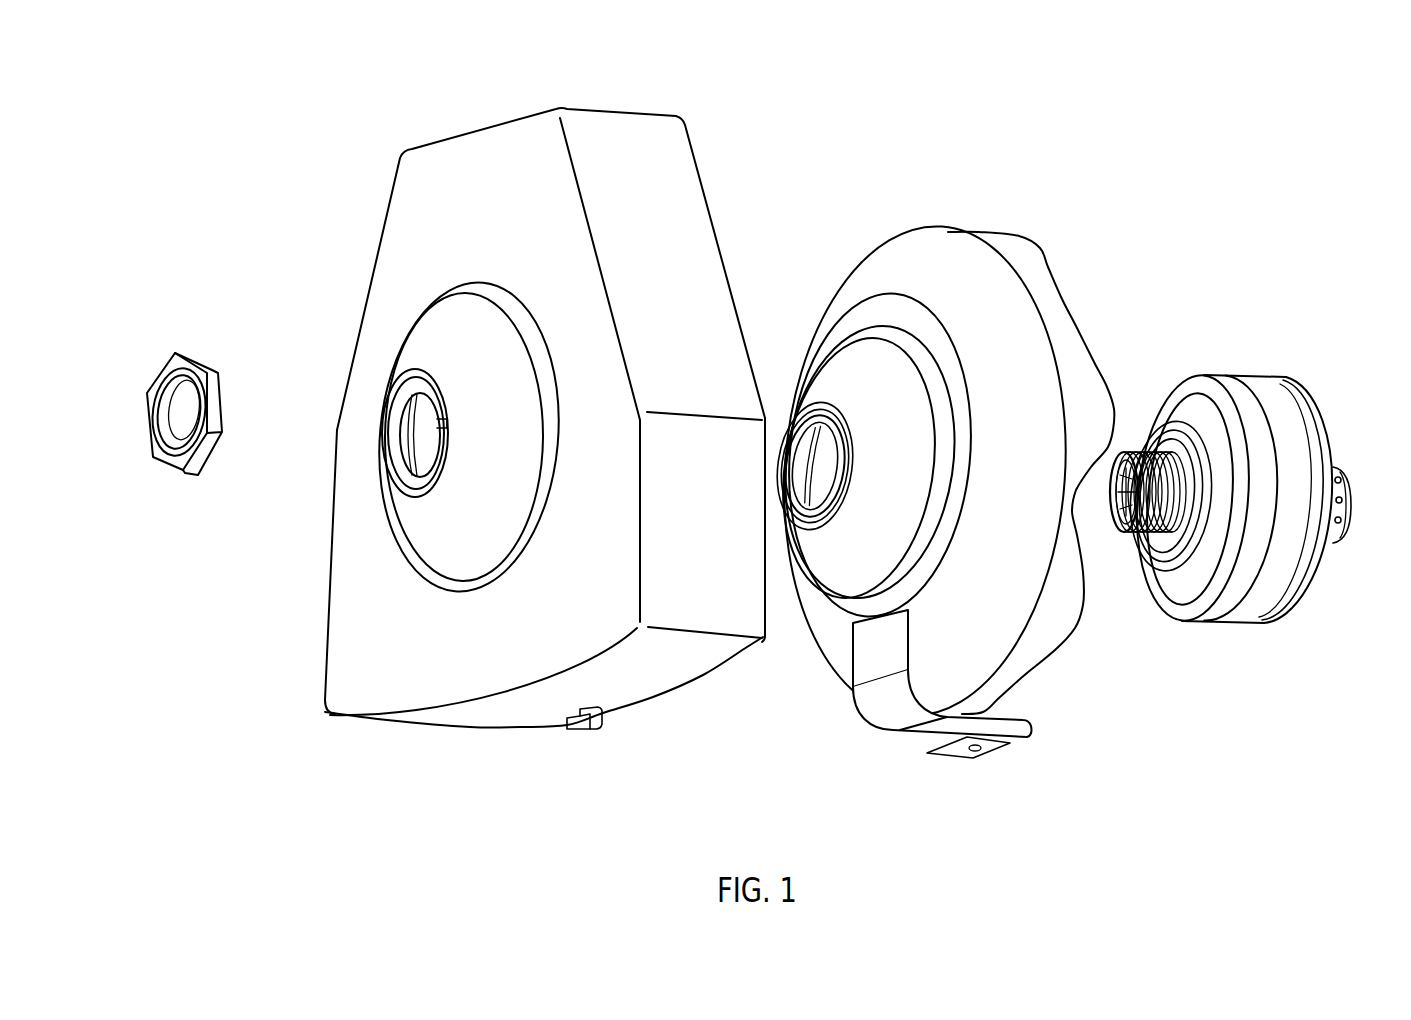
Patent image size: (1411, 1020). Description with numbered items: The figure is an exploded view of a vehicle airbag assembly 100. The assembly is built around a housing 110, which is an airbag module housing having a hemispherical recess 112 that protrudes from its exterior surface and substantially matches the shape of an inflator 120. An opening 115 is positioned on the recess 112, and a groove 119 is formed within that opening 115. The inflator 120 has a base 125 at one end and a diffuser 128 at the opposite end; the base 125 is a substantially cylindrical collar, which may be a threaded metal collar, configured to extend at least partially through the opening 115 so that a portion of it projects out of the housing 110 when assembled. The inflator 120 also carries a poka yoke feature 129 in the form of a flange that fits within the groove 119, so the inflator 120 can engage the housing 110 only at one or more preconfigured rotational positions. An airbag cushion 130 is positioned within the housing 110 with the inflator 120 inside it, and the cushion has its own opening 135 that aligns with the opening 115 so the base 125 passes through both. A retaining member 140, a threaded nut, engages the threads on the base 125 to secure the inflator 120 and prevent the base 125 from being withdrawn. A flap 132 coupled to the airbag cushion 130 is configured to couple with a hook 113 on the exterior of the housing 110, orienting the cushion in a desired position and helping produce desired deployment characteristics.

The vehicle airbag assembly 100 is at (918, 93).
The housing 110 is at (498, 175).
The recess 112 is at (440, 548).
The hook 113 is at (593, 728).
The opening 115 is at (425, 443).
The groove 119 is at (438, 422).
The inflator 120 is at (1270, 350).
The base 125 is at (1120, 453).
The diffuser 128 is at (1350, 507).
The poka yoke feature 129 is at (1182, 505).
The airbag cushion 130 is at (908, 258).
The flap 132 is at (1030, 733).
The opening 135 is at (807, 460).
The retaining member 140 is at (175, 458).